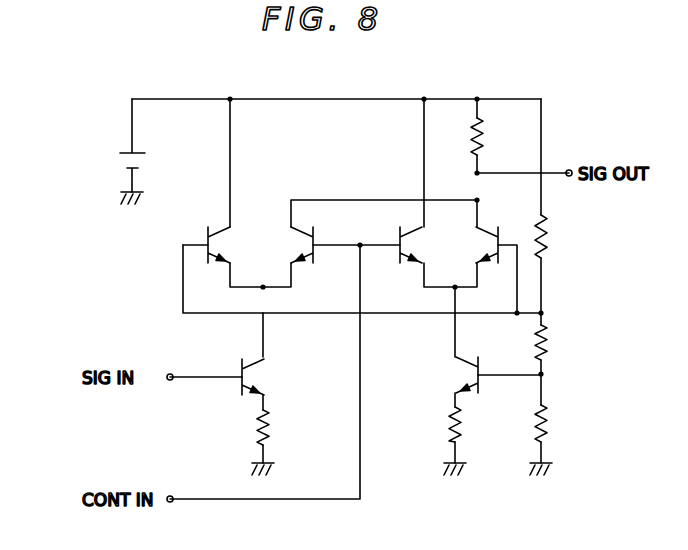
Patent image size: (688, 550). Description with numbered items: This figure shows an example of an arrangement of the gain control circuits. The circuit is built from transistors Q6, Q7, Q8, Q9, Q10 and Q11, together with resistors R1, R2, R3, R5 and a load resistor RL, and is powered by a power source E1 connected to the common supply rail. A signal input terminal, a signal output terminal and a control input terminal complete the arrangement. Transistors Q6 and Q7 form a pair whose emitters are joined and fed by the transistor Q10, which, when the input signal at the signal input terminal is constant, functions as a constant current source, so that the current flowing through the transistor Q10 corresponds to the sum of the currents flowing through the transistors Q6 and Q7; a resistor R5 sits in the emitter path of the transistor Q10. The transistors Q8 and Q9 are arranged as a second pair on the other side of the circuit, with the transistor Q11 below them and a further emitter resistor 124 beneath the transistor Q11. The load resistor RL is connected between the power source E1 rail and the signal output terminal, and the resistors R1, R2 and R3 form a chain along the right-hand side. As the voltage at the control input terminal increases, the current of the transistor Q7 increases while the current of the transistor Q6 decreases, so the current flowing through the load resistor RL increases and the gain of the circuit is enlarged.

The power source E1 is at (120, 163).
The transistor Q6 is at (208, 238).
The transistor Q7 is at (300, 242).
The transistor Q8 is at (408, 258).
The transistor Q9 is at (490, 260).
The transistor Q10 is at (240, 392).
The transistor Q11 is at (470, 392).
The load resistor RL is at (483, 130).
The resistor R1 is at (550, 250).
The resistor R2 is at (550, 338).
The resistor R3 is at (550, 418).
The resistor R5 is at (272, 420).
The emitter resistor 124 is at (448, 425).